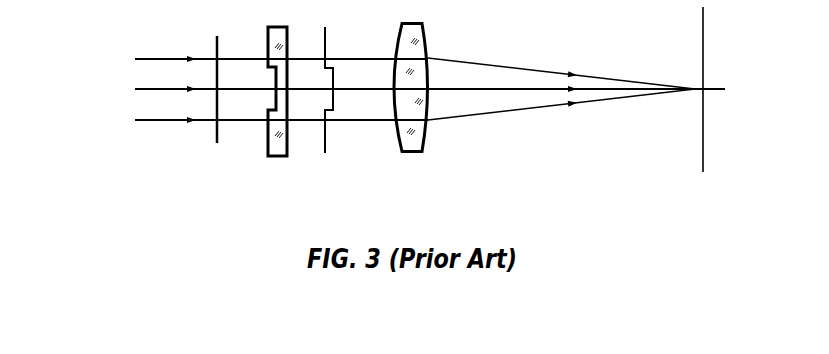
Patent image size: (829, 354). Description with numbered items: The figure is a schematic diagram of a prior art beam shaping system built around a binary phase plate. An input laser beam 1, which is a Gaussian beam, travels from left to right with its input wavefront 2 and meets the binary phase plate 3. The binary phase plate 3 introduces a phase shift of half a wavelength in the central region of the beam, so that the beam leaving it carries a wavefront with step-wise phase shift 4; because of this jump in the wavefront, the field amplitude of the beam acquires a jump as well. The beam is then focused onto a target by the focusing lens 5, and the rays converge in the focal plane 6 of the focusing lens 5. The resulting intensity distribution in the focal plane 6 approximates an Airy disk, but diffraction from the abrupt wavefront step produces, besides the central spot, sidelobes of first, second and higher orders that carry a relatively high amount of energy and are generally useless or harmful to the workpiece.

The input laser beam 1 is at (145, 127).
The input wavefront 2 is at (216, 138).
The binary phase plate 3 is at (270, 154).
The wavefront with step-wise phase shift 4 is at (325, 137).
The focusing lens 5 is at (425, 135).
The focal plane 6 is at (702, 135).